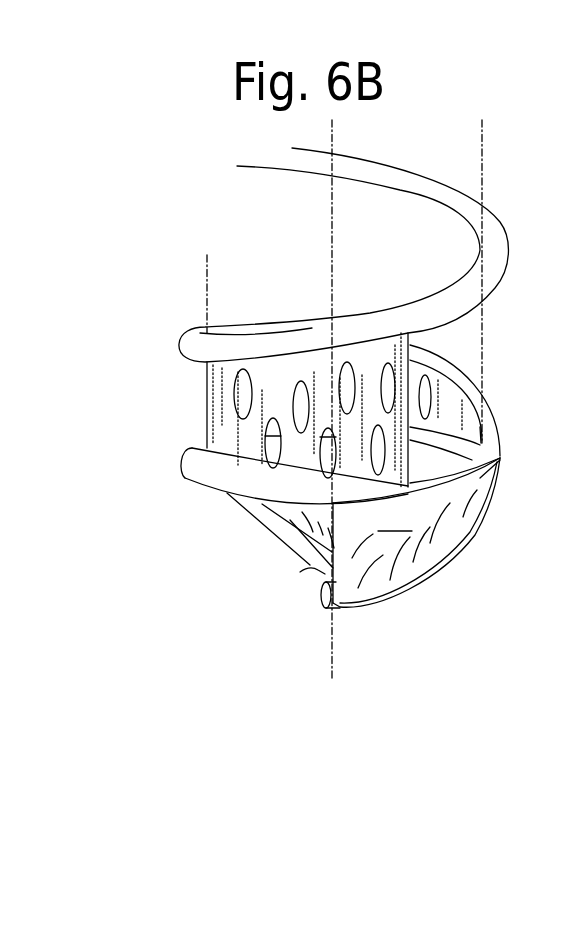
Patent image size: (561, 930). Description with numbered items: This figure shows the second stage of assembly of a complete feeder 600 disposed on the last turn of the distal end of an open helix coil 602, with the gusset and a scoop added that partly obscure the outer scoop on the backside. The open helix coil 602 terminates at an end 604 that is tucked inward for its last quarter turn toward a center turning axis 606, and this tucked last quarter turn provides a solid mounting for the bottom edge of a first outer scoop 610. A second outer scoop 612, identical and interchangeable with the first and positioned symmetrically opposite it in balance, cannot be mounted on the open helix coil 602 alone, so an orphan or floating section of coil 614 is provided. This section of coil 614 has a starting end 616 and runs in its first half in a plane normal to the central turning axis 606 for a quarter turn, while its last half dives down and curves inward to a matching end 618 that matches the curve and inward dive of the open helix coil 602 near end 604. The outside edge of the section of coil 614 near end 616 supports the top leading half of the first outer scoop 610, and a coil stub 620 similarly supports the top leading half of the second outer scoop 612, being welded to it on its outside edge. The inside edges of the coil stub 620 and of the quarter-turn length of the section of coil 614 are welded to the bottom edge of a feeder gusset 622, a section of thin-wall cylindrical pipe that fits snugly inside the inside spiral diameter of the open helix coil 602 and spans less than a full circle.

The feeder 600 is at (130, 285).
The open helix coil 602 is at (438, 199).
The end 604 is at (323, 595).
The center turning axis 606 is at (332, 229).
The first outer scoop 610 is at (405, 605).
The second outer scoop 612 is at (296, 518).
The section of coil 614 is at (183, 463).
The starting end 616 is at (410, 487).
The matching end 618 is at (298, 582).
The coil stub 620 is at (455, 440).
The feeder gusset 622 is at (216, 403).